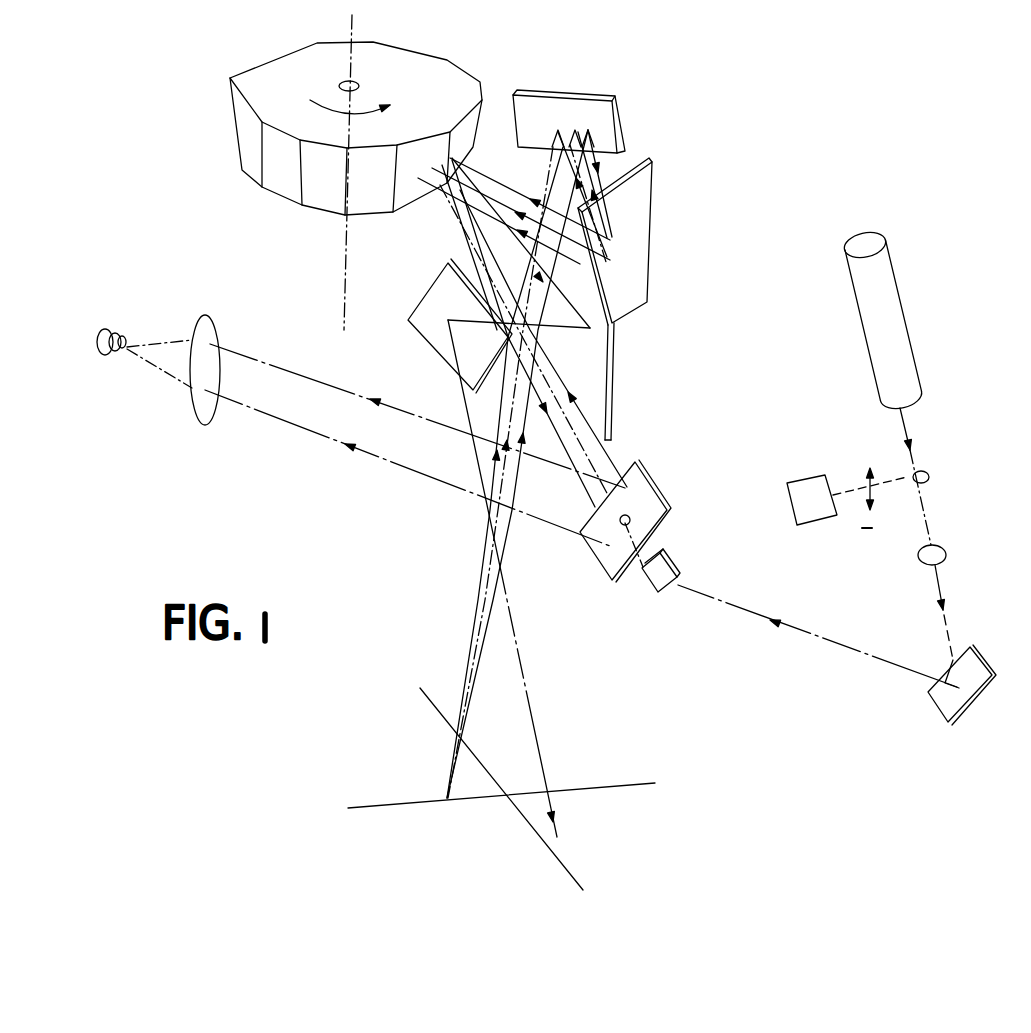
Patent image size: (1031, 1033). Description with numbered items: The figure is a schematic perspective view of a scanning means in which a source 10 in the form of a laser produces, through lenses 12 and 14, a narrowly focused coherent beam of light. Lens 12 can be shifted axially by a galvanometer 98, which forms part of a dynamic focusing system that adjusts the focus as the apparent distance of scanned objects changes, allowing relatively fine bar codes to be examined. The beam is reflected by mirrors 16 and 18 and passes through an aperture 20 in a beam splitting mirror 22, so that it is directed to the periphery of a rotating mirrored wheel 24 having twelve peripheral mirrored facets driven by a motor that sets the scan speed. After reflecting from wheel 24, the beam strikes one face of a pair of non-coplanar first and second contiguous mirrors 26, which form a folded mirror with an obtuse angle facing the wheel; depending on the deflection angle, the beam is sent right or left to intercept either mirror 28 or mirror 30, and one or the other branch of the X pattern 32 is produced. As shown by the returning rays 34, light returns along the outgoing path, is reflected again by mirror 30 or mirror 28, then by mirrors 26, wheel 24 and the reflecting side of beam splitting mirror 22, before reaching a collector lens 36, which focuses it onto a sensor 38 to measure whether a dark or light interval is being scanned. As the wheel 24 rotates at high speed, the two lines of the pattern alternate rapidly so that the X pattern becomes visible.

The source 10 is at (883, 280).
The lens 12 is at (928, 478).
The lens 14 is at (947, 548).
The mirror 16 is at (947, 700).
The mirror 18 is at (656, 592).
The aperture 20 is at (630, 520).
The beam splitting mirror 22 is at (642, 490).
The rotating mirrored wheel 24 is at (273, 70).
The first and second contiguous mirrors 26 is at (603, 355).
The mirror 28 is at (435, 330).
The mirror 30 is at (563, 110).
The X pattern 32 is at (600, 785).
The returning rays 34 is at (413, 418).
The collector lens 36 is at (198, 408).
The sensor 38 is at (100, 352).
The galvanometer 98 is at (803, 528).